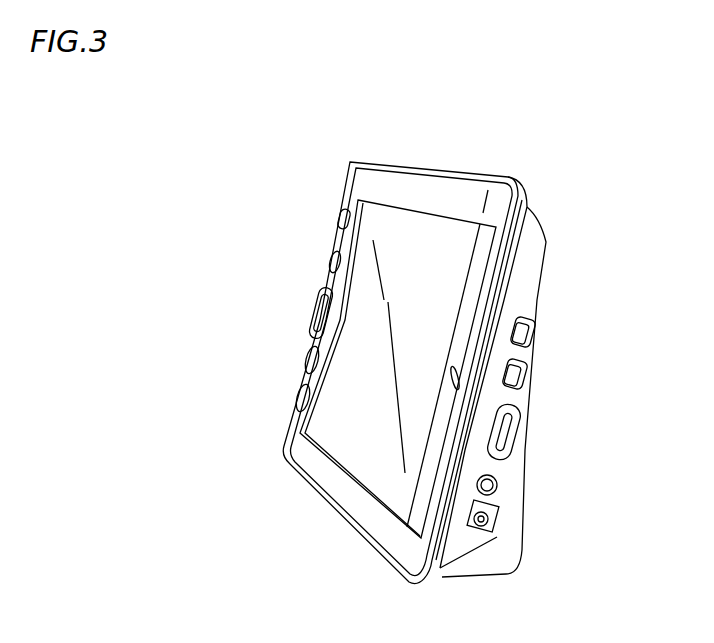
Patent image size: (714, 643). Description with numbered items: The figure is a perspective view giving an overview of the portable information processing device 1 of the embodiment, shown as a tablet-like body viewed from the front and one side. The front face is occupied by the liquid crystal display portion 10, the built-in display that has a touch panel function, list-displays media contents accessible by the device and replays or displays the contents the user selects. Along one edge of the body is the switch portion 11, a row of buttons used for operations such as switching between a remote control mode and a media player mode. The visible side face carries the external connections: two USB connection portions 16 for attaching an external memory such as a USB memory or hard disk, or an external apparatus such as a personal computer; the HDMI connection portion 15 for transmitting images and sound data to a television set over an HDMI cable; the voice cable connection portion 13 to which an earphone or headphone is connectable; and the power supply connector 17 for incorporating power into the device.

The portable information processing device 1 is at (582, 158).
The liquid crystal display portion 10 is at (418, 227).
The switch portion 11 is at (340, 213).
The voice cable connection portion 13 is at (497, 489).
The HDMI connection portion 15 is at (517, 438).
The USB connection portions 16 is at (531, 331).
The power supply connector 17 is at (495, 523).